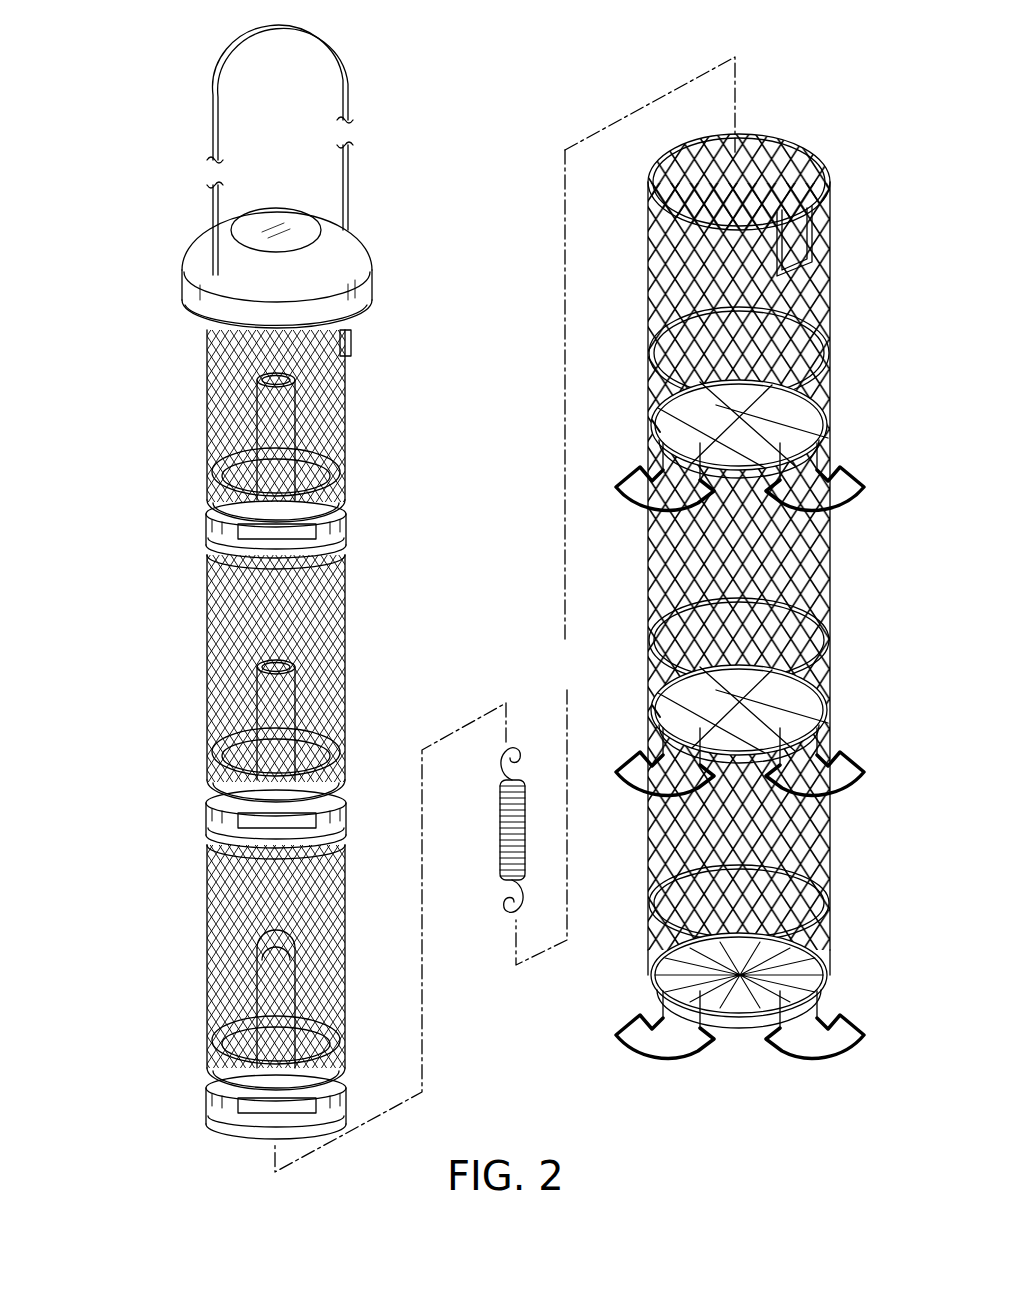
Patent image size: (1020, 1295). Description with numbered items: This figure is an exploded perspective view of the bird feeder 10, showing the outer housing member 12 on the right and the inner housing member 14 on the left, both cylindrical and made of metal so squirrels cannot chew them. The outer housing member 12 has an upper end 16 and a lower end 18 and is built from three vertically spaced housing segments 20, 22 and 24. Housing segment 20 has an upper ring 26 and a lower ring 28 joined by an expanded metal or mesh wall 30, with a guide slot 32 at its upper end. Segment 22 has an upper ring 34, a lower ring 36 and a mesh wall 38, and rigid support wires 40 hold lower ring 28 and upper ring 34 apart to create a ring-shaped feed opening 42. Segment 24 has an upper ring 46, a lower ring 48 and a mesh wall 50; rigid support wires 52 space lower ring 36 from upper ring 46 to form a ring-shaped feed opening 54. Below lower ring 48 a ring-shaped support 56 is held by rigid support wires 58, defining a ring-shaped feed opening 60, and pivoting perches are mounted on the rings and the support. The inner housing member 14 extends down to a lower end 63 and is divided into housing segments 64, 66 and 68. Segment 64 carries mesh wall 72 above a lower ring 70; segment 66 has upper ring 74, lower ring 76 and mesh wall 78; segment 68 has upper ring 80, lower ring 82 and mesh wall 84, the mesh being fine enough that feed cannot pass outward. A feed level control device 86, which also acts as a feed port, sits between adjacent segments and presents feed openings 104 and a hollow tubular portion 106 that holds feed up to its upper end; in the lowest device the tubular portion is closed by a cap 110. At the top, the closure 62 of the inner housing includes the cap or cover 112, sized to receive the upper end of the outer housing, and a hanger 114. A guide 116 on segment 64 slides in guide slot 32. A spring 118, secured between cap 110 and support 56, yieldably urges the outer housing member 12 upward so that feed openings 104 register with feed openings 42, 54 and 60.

The bird feeder 10 is at (494, 132).
The outer housing member 12 is at (728, 574).
The inner housing member 14 is at (281, 426).
The upper end 16 is at (795, 115).
The lower end 18 is at (727, 1037).
The housing segment 20 is at (744, 517).
The housing segment 22 is at (743, 619).
The housing segment 24 is at (746, 901).
The upper ring 26 is at (820, 165).
The lower ring 28 is at (832, 360).
The expanded metal or mesh wall 30 is at (652, 290).
The guide slot 32 is at (828, 222).
The upper ring 34 is at (746, 475).
The lower ring 36 is at (832, 645).
The expanded metal or mesh wall 38 is at (656, 592).
The rigid support wires 40 is at (660, 410).
The ring-shaped feed opening 42 is at (792, 420).
The upper ring 46 is at (750, 749).
The lower ring 48 is at (656, 948).
The expanded metal or mesh wall 50 is at (657, 880).
The rigid support wires 52 is at (663, 705).
The ring-shaped feed opening 54 is at (797, 706).
The ring-shaped support 56 is at (627, 1008).
The rigid support wires 58 is at (837, 990).
The ring-shaped feed opening 60 is at (832, 948).
The cap 62 is at (398, 272).
The lower end 63 is at (250, 1153).
The housing segment 64 is at (205, 373).
The housing segment 66 is at (261, 678).
The housing segment 68 is at (257, 967).
The connector ring top 70 is at (348, 513).
The expanded metal or mesh wall 72 is at (345, 418).
The upper ring 74 is at (348, 540).
The lower ring 76 is at (350, 768).
The expanded metal or mesh wall 78 is at (340, 640).
The upper ring 80 is at (343, 822).
The lower ring 82 is at (342, 1060).
The expanded metal or mesh wall 84 is at (342, 884).
The feed level control device 86 is at (266, 524).
The feed openings 104 is at (345, 575).
The hollow tubular portion 106 is at (265, 427).
The cap 110 is at (262, 946).
The cap or cover 112 is at (352, 298).
The hanger 114 is at (352, 95).
The guide 116 is at (352, 348).
The spring 118 is at (500, 838).